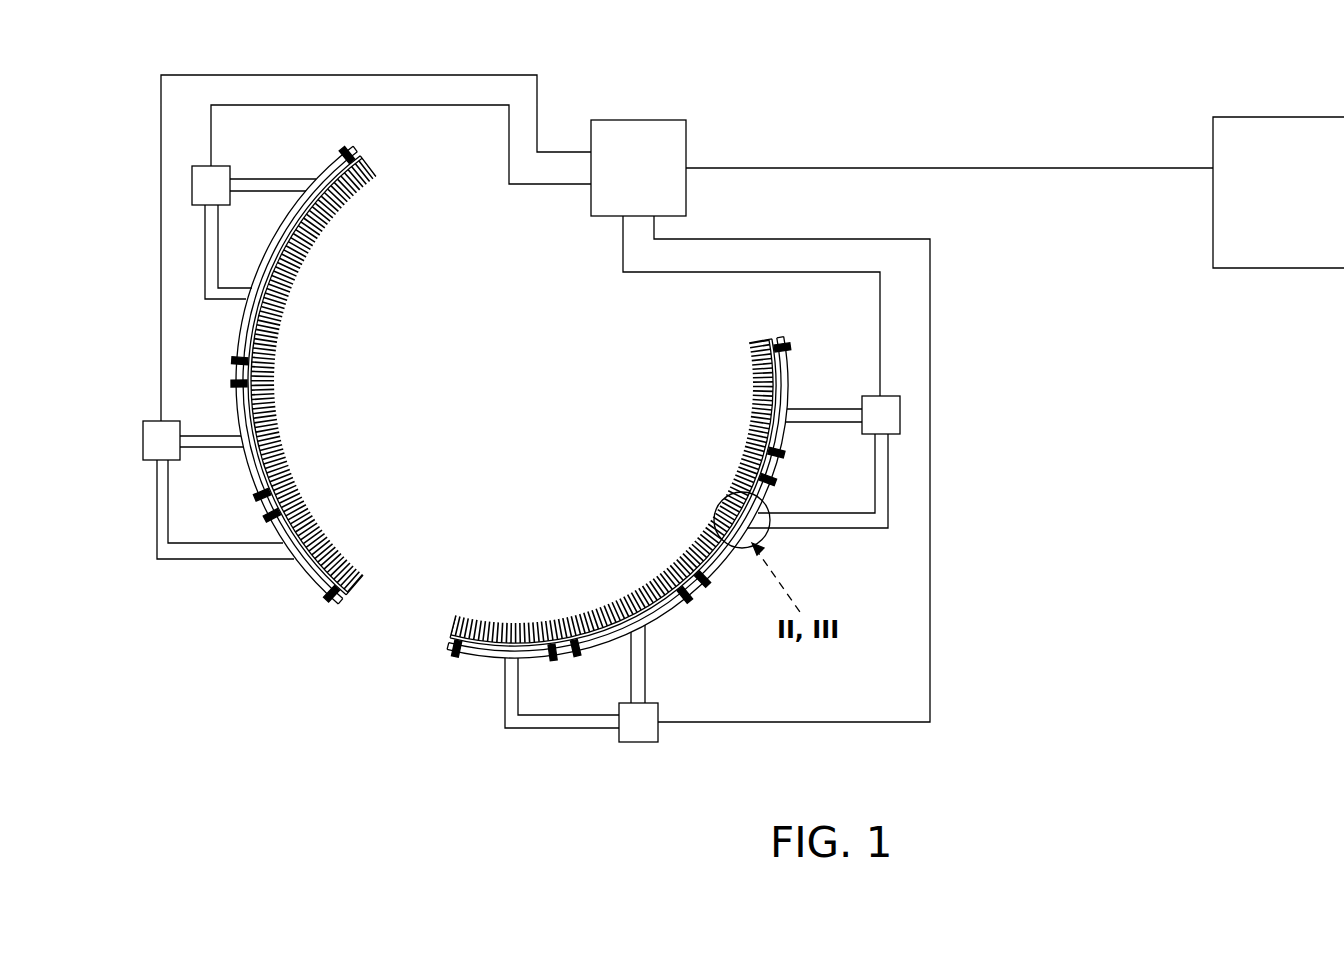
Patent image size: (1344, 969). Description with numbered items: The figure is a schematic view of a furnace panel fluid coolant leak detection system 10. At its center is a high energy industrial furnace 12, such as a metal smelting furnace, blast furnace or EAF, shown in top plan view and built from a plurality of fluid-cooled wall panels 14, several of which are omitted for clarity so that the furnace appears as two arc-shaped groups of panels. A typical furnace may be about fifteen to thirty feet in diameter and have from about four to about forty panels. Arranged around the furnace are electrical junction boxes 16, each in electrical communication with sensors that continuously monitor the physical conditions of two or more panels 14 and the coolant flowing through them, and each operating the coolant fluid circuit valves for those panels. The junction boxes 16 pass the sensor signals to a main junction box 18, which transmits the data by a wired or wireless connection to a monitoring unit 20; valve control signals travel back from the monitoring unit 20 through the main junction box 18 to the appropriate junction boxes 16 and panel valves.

The furnace panel fluid coolant leak detection system 10 is at (938, 104).
The furnace 12 is at (511, 421).
The fluid-cooled wall panels 14 is at (335, 210).
The electrical junction boxes 16 is at (193, 184).
The main junction box 18 is at (640, 135).
The monitoring unit 20 is at (1283, 155).